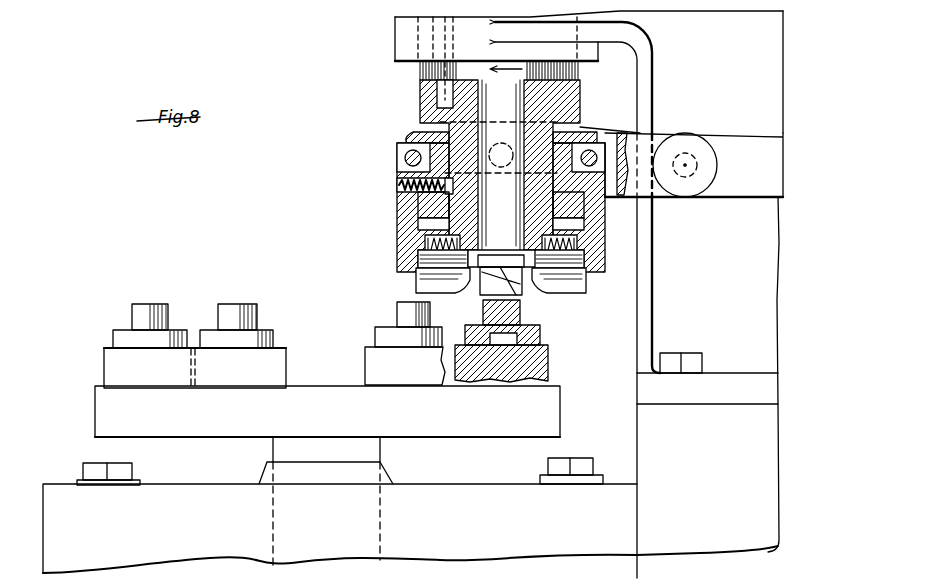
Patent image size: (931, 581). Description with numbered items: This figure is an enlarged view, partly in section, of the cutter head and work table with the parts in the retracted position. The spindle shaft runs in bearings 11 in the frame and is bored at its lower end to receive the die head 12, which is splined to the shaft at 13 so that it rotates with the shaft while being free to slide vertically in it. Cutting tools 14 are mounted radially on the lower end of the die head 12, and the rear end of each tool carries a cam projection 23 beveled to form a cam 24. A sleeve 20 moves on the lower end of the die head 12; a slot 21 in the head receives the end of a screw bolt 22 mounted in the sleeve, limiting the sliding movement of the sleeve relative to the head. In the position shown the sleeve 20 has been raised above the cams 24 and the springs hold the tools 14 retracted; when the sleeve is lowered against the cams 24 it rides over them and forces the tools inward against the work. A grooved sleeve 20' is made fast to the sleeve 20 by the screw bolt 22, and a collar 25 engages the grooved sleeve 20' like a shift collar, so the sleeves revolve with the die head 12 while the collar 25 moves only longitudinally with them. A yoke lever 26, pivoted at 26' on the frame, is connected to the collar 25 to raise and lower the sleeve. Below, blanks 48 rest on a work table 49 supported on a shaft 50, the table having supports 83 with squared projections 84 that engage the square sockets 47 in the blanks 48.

The bearings 11 is at (405, 43).
The die head 12 is at (542, 105).
The spline 13 is at (440, 99).
The grooved sleeve 20' is at (500, 157).
The sleeve 20 is at (475, 207).
The collar 25 is at (397, 157).
The screw bolt 22 is at (397, 184).
The slot 21 is at (450, 205).
The cam 24 is at (440, 270).
The cutting tool 14 is at (573, 281).
The cam projection 23 is at (418, 285).
The square socket 47 is at (490, 330).
The blanks 48 is at (525, 329).
The supports 83 is at (548, 367).
The squared projections 84 is at (503, 338).
The work table 49 is at (553, 428).
The shaft 50 is at (360, 449).
The yoke lever 26 is at (694, 151).
The pivot 26' is at (698, 147).